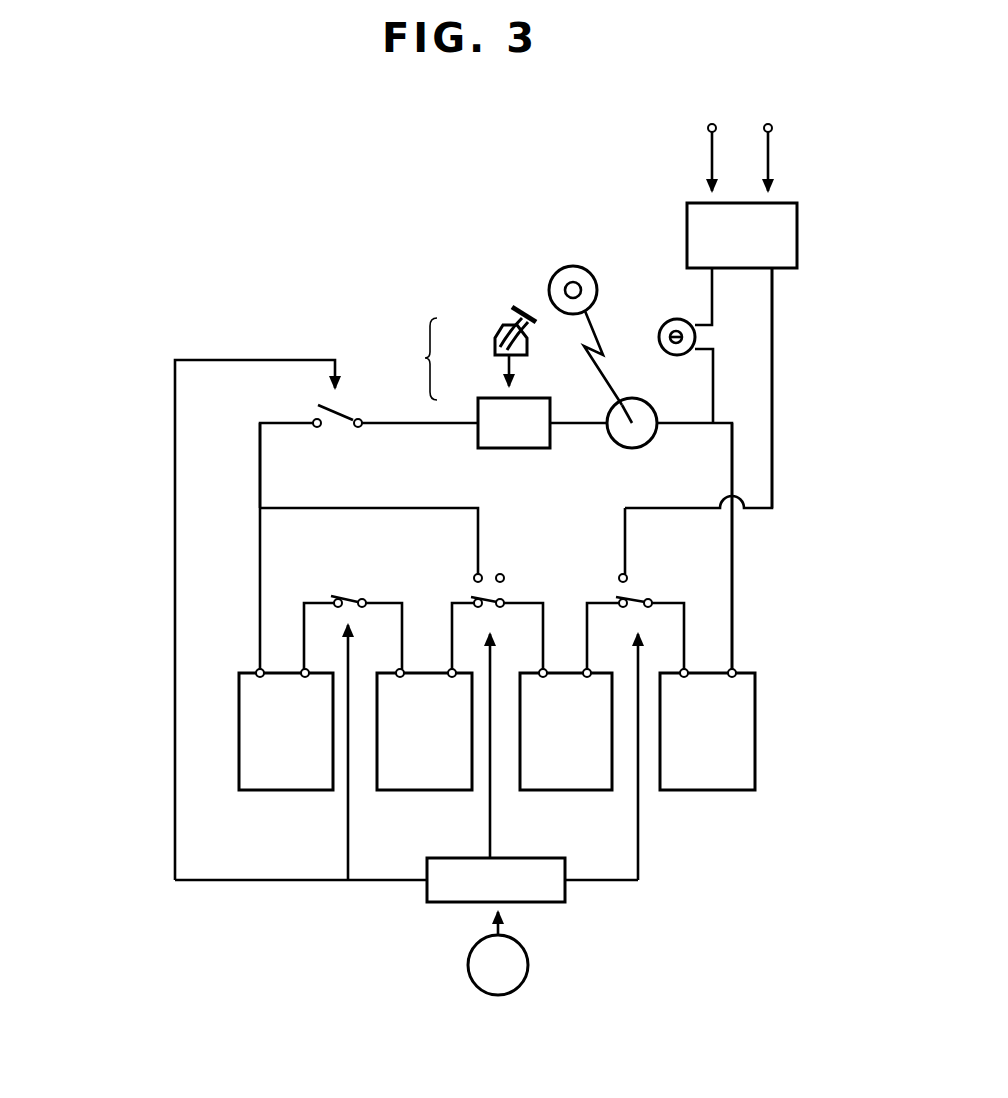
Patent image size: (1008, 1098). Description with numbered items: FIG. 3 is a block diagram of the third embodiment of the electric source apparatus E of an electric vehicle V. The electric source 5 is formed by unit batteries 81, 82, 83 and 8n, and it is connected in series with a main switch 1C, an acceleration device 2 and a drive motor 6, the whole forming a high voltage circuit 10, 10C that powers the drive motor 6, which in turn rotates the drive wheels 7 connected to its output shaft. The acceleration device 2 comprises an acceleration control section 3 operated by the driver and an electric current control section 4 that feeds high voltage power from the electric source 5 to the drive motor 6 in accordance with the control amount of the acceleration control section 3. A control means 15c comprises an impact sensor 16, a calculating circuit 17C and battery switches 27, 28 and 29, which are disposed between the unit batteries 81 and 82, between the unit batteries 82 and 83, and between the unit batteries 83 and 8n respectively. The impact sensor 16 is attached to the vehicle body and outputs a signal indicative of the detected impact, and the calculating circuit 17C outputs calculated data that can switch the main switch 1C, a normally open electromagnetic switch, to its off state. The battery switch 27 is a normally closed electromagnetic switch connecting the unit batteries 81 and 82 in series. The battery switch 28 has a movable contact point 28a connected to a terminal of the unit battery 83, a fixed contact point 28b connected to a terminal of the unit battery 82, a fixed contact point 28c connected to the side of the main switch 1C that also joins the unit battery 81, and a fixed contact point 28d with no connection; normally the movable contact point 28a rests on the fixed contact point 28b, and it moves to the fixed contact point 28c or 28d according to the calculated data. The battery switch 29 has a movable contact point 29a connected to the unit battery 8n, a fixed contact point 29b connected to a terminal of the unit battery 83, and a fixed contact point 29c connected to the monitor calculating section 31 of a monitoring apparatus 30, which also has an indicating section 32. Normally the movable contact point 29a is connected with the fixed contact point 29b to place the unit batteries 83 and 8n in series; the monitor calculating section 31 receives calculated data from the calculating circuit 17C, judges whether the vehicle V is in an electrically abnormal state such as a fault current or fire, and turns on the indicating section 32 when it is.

The electric vehicle V is at (172, 302).
The electric source apparatus E is at (137, 418).
The main switch 1C is at (345, 402).
The acceleration device 2 is at (475, 377).
The acceleration control section 3 is at (494, 338).
The electric current control section 4 is at (480, 398).
The electric source 5 is at (440, 754).
The drive motor 6 is at (635, 398).
The drive wheels 7 is at (573, 266).
The high voltage circuit 10 is at (733, 567).
The high voltage circuit 10C is at (442, 914).
The control means 15c is at (248, 461).
The impact sensor 16 is at (527, 973).
The calculating circuit 17C is at (565, 898).
The battery switch 27 is at (342, 597).
The battery switch 28 is at (484, 565).
The movable contact point 28a is at (499, 600).
The fixed contact point 28b is at (468, 599).
The fixed contact point 28c is at (476, 574).
The fixed contact point 28d is at (503, 574).
The battery switch 29 is at (640, 591).
The movable contact point 29a is at (649, 600).
The fixed contact point 29b is at (619, 601).
The fixed contact point 29c is at (620, 574).
The monitoring apparatus 30 is at (786, 298).
The monitor calculating section 31 is at (797, 232).
The indicating section 32 is at (665, 322).
The unit battery 81 is at (283, 790).
The unit battery 82 is at (418, 790).
The unit battery 83 is at (560, 790).
The unit battery 8n is at (697, 790).